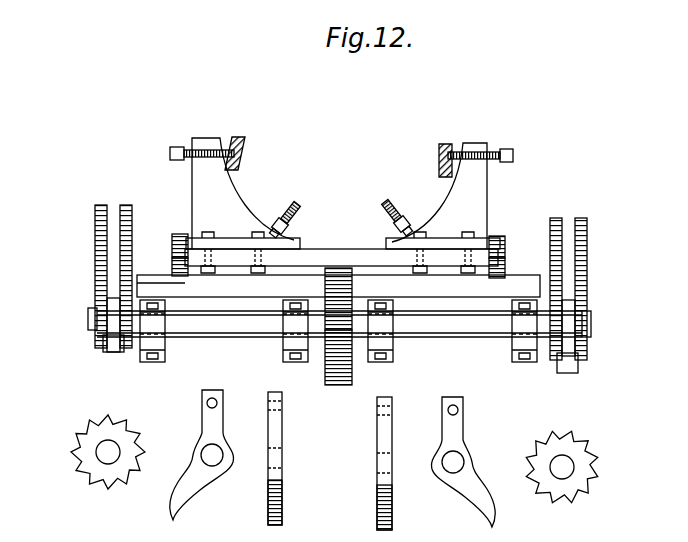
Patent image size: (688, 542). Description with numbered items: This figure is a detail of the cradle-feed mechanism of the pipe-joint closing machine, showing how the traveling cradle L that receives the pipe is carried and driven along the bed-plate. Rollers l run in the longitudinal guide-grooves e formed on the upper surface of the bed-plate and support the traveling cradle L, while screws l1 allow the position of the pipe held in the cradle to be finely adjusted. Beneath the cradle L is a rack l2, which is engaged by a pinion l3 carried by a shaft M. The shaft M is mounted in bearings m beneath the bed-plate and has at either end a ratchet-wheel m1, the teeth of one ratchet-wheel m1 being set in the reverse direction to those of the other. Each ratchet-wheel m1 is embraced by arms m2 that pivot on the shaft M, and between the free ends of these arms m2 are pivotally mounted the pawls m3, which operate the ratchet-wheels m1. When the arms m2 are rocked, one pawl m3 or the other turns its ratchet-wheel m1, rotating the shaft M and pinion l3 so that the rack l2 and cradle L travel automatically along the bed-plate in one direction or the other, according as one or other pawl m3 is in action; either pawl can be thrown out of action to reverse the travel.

The traveling cradle L is at (343, 205).
The rollers l is at (178, 240).
The screws l1 is at (400, 220).
The rack l2 is at (337, 268).
The pinion l3 is at (333, 387).
The longitudinal guide-grooves e is at (170, 270).
The shaft M is at (90, 321).
The bearings m is at (155, 361).
The ratchet-wheel m1 is at (600, 396).
The arms m2 is at (124, 208).
The pawls m3 is at (468, 505).